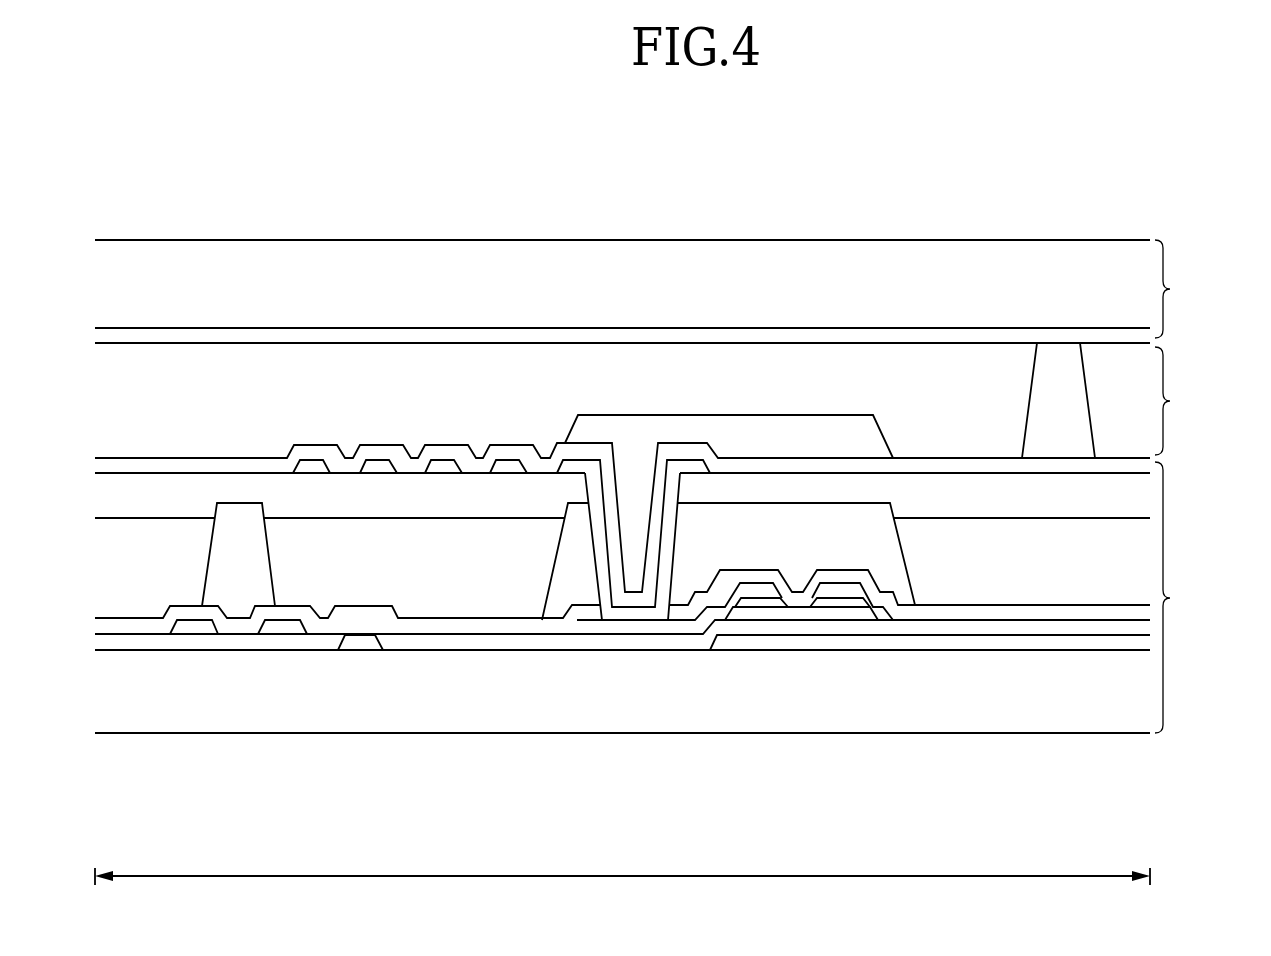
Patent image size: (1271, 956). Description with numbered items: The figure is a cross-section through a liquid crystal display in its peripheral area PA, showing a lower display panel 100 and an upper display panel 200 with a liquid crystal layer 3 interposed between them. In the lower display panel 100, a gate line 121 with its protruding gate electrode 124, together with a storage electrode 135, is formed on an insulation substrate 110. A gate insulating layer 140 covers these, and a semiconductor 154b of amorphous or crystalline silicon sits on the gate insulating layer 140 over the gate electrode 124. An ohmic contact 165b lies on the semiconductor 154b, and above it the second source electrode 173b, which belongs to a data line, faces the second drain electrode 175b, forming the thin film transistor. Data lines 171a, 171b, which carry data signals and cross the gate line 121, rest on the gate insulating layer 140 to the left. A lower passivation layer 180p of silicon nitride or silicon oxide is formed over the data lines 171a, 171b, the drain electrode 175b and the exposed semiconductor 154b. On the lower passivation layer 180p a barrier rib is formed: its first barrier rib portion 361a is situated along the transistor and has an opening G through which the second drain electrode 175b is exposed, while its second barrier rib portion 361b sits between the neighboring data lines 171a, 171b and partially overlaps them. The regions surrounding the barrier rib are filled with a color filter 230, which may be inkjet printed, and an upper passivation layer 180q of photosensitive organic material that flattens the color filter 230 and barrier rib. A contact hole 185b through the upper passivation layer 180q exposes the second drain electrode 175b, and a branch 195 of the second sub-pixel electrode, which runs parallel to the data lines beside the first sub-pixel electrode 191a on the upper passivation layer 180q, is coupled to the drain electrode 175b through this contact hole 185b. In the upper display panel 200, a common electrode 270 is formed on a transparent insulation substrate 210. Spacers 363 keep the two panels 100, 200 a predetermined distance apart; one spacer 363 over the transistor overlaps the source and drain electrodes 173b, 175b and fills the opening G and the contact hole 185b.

The insulation substrate 110 is at (1125, 710).
The gate line 121 is at (997, 643).
The gate electrode 124 is at (781, 642).
The storage electrode 135 is at (360, 640).
The gate insulating layer 140 is at (632, 645).
The semiconductor 154b is at (805, 612).
The ohmic contact 165b is at (762, 602).
The data line 171a is at (193, 627).
The data line 171b is at (282, 627).
The second source electrode 173b is at (851, 593).
The second drain electrode 175b is at (680, 625).
The lower passivation layer 180p is at (422, 627).
The upper passivation layer 180q is at (510, 498).
The contact hole 185b is at (658, 483).
The first sub-pixel electrode 191a is at (378, 463).
The branch 195 is at (310, 463).
The upper display panel 200 is at (1184, 289).
The transparent insulation substrate 210 is at (788, 267).
The color filter 230 is at (465, 570).
The common electrode 270 is at (648, 337).
The liquid crystal layer 3 is at (1172, 401).
The lower display panel 100 is at (1184, 597).
The first barrier rib portion 361a is at (578, 578).
The second barrier rib portion 361b is at (240, 540).
The spacer 363 is at (1055, 372).
The opening G is at (672, 540).
The peripheral area PA is at (622, 891).